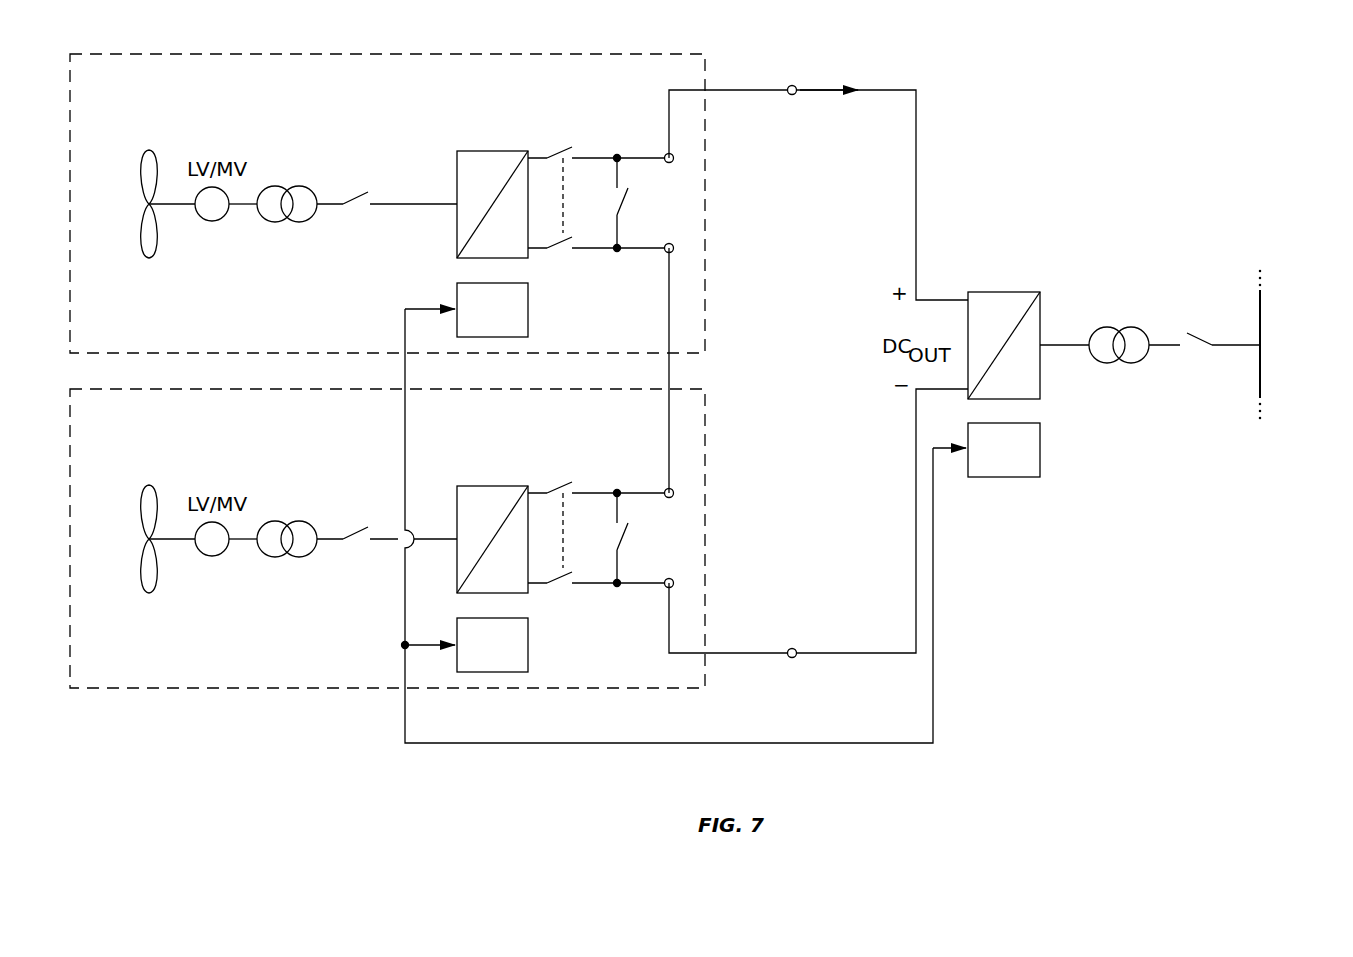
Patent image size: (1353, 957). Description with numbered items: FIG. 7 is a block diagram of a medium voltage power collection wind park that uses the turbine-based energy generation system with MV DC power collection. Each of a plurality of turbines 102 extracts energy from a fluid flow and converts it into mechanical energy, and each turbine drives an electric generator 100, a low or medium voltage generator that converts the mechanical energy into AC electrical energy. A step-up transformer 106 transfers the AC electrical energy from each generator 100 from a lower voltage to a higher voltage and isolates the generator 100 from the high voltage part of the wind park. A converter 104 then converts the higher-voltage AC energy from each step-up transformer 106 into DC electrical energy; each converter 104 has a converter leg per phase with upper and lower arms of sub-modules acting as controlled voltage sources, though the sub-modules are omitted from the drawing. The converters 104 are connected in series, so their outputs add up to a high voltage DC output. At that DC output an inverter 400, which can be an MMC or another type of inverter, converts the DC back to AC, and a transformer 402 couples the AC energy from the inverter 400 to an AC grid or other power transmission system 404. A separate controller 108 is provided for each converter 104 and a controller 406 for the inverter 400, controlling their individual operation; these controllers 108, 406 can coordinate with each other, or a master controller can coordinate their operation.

The electric generator 100 is at (213, 232).
The turbine 102 is at (148, 150).
The converter 104 is at (484, 143).
The step-up transformer 106 is at (280, 176).
The controller 108 is at (466, 477).
The inverter 400 is at (1005, 273).
The transformer 402 is at (1128, 316).
The AC grid or power transmission system 404 is at (1262, 310).
The controller 406 is at (986, 450).